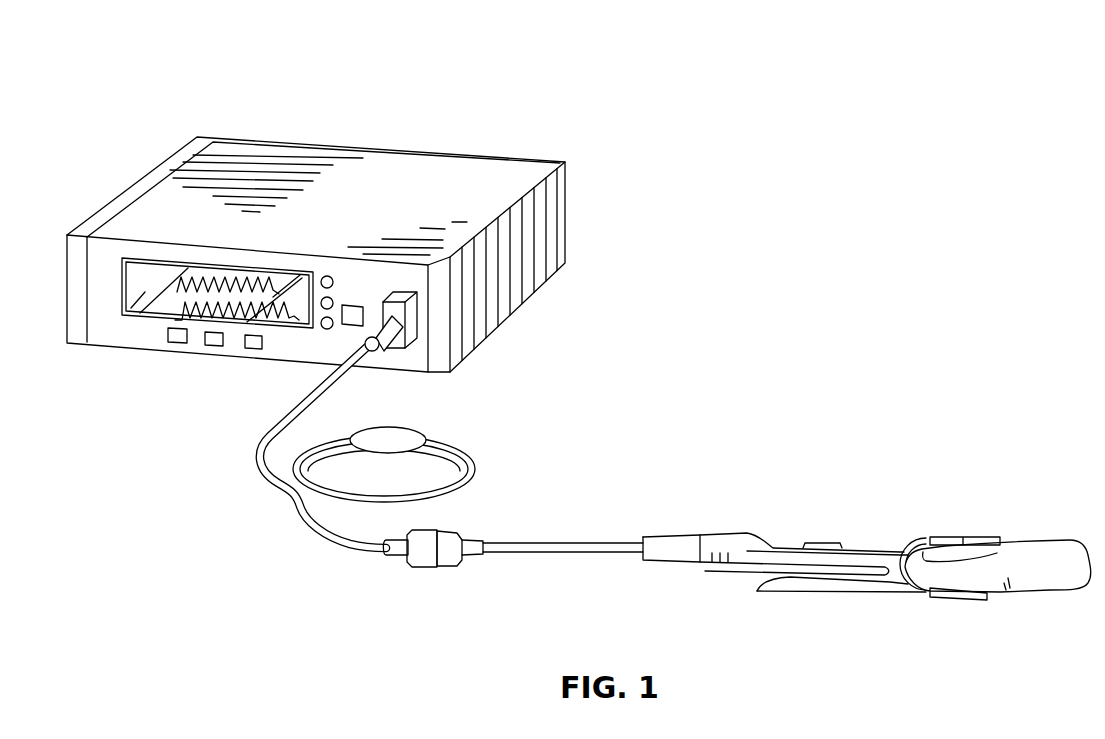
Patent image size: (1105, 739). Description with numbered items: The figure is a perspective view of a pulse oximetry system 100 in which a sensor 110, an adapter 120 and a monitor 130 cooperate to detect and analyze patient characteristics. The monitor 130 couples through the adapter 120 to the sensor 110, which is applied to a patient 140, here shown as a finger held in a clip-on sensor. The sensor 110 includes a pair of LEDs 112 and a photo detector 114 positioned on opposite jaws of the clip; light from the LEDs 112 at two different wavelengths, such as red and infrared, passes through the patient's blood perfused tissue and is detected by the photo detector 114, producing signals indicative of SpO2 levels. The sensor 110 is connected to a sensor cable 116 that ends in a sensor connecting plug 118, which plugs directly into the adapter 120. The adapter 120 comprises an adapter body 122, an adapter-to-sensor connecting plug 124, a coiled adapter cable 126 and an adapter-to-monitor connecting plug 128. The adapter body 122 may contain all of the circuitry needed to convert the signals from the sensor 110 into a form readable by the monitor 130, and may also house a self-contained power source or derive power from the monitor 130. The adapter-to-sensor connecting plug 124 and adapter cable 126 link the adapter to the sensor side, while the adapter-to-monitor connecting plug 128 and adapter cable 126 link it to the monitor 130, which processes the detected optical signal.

The pulse oximetry system 100 is at (736, 92).
The sensor 110 is at (715, 533).
The pair of LEDs 112 is at (949, 537).
The photo detector 114 is at (950, 599).
The sensor cable 116 is at (540, 541).
The sensor connecting plug 118 is at (448, 570).
The adapter 120 is at (268, 494).
The adapter body 122 is at (391, 430).
The adapter-to-sensor connecting plug 124 is at (420, 531).
The adapter cable 126 is at (473, 457).
The adapter-to-monitor connecting plug 128 is at (381, 349).
The monitor 130 is at (371, 146).
The patient 140 is at (1044, 545).